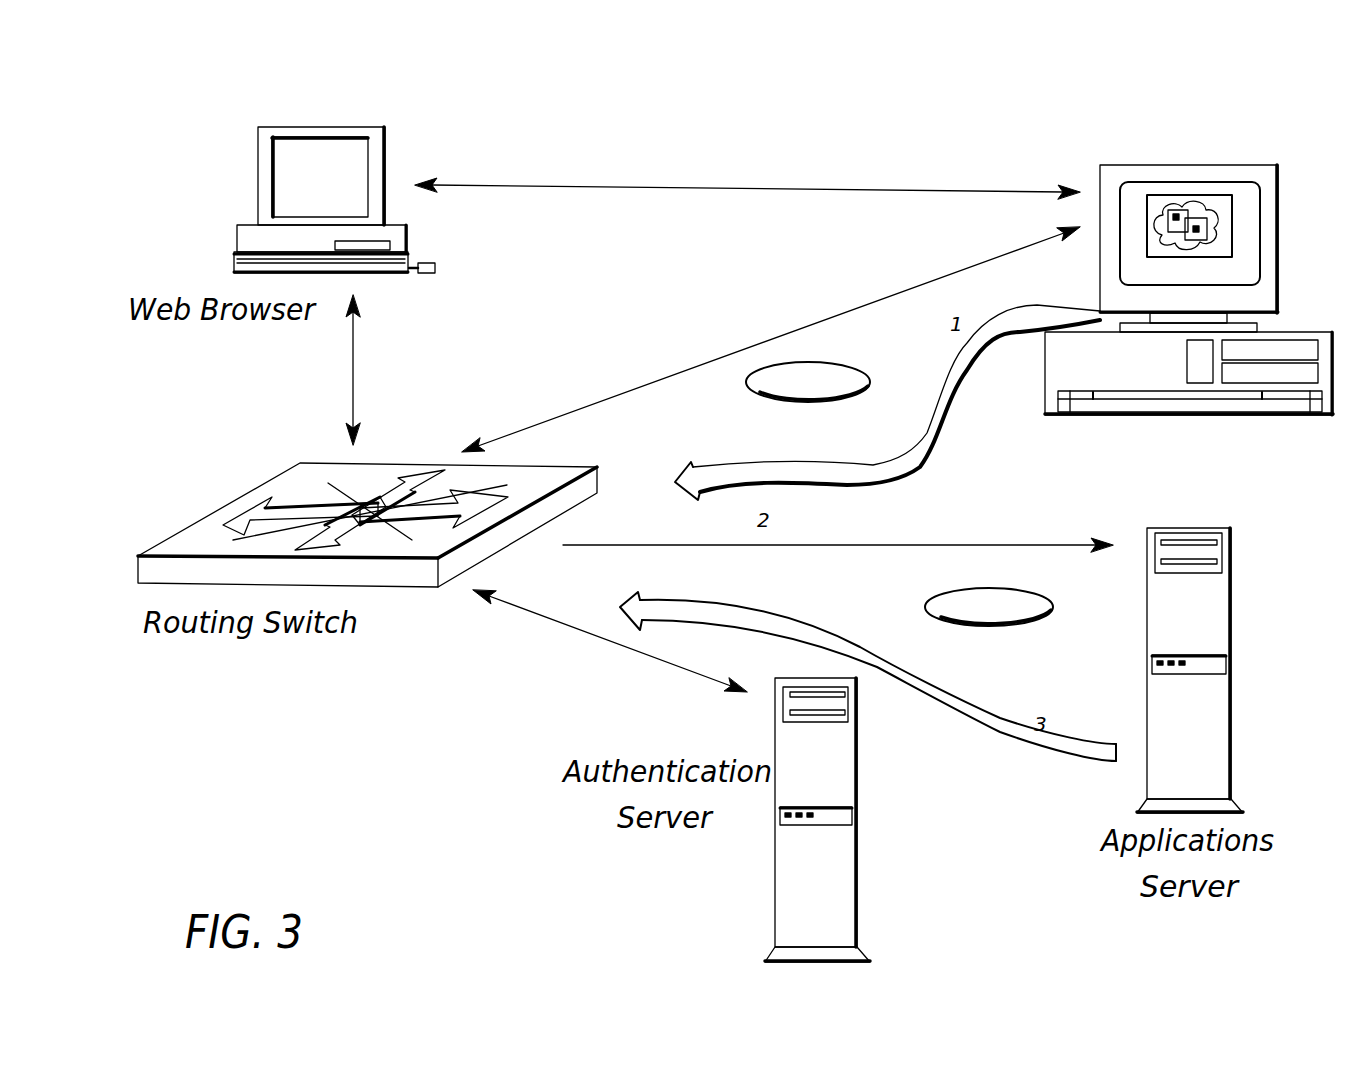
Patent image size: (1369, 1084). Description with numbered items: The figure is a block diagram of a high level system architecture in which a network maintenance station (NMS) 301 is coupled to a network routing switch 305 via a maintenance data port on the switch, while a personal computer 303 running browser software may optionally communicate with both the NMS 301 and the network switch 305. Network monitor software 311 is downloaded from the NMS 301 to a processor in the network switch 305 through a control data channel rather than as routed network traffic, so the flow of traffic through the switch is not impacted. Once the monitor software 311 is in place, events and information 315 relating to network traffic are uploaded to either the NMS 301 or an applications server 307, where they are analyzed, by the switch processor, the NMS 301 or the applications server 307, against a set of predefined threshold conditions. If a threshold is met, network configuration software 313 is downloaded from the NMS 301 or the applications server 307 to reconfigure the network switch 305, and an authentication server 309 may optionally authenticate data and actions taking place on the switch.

The network maintenance station (NMS) 301 is at (1205, 165).
The personal computer 303 is at (325, 127).
The network routing switch 305 is at (222, 510).
The applications server 307 is at (1231, 573).
The authentication server 309 is at (857, 725).
The network monitor software 311 is at (810, 362).
The network configuration software 313 is at (1017, 590).
The events and information 315 is at (932, 508).